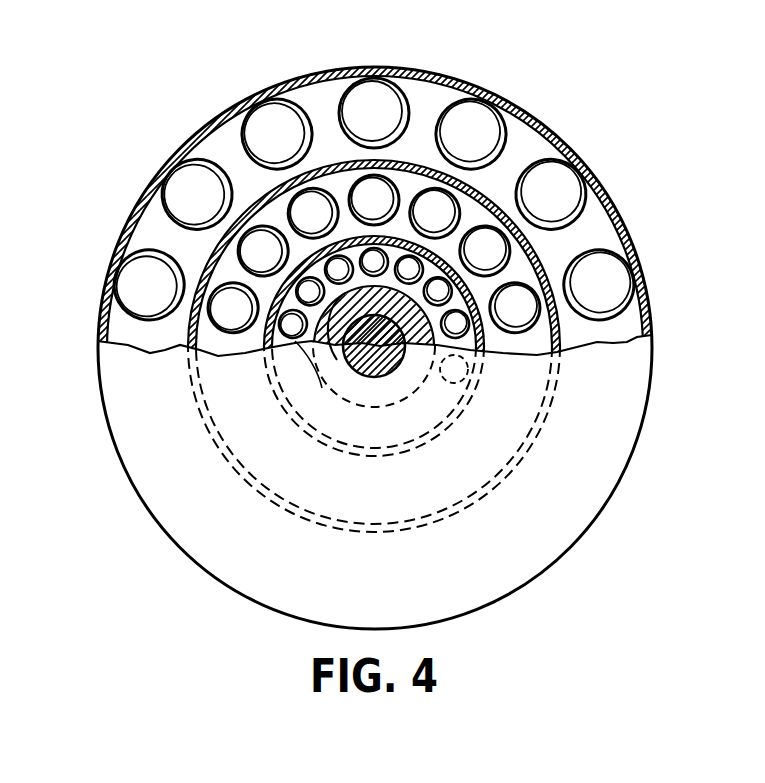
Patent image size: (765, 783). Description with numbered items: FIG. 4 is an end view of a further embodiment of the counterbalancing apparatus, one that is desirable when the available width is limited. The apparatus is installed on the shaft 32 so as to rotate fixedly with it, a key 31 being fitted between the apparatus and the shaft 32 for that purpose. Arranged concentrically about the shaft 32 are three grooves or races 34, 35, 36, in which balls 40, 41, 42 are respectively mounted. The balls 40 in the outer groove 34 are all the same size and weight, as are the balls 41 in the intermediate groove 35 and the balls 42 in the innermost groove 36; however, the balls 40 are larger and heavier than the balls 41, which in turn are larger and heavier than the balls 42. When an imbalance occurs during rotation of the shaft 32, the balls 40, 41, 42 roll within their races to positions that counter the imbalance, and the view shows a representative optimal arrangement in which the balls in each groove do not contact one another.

The key 31 is at (332, 362).
The shaft 32 is at (388, 378).
The groove 34 is at (540, 261).
The groove 35 is at (275, 300).
The groove 36 is at (372, 320).
The balls 40 is at (260, 130).
The balls 41 is at (473, 193).
The balls 42 is at (307, 310).